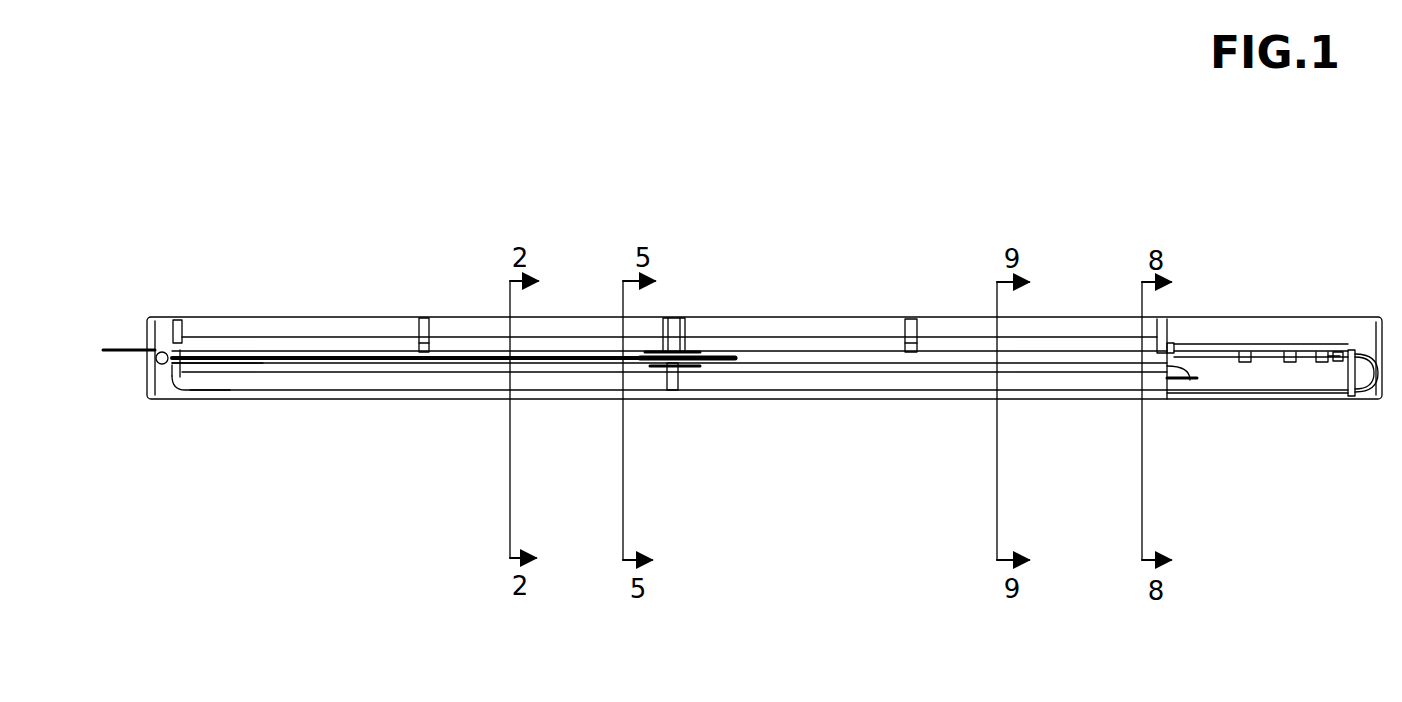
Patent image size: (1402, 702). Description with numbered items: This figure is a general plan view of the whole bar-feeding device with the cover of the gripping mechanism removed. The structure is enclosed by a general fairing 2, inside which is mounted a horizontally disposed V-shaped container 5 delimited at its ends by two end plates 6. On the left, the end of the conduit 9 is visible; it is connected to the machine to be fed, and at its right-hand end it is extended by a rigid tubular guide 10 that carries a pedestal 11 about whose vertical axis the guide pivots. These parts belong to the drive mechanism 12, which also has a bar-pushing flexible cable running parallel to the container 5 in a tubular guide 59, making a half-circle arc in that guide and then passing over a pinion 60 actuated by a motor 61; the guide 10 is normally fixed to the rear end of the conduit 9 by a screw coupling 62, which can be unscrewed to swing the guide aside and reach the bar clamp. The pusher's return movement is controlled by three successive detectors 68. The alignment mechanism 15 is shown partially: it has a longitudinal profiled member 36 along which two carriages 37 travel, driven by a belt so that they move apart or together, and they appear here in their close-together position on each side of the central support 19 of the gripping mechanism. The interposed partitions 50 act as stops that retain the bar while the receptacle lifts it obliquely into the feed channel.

The general fairing 2 is at (808, 399).
The container 5 is at (211, 382).
The end plates 6 is at (172, 366).
The conduit 9 is at (117, 347).
The rigid tubular guide 10 is at (1248, 350).
The pedestal 11 is at (1336, 361).
The drive mechanism 12 is at (1221, 337).
The alignment mechanism 15 is at (302, 346).
The central support 19 is at (690, 330).
The longitudinal profiled member 36 is at (262, 363).
The carriages 37 is at (655, 352).
The interposed partitions 50 is at (425, 318).
The tubular guide 59 is at (1243, 393).
The pinion 60 is at (1350, 349).
The motor 61 is at (1343, 378).
The screw coupling 62 is at (1173, 345).
The detectors 68 is at (1262, 352).